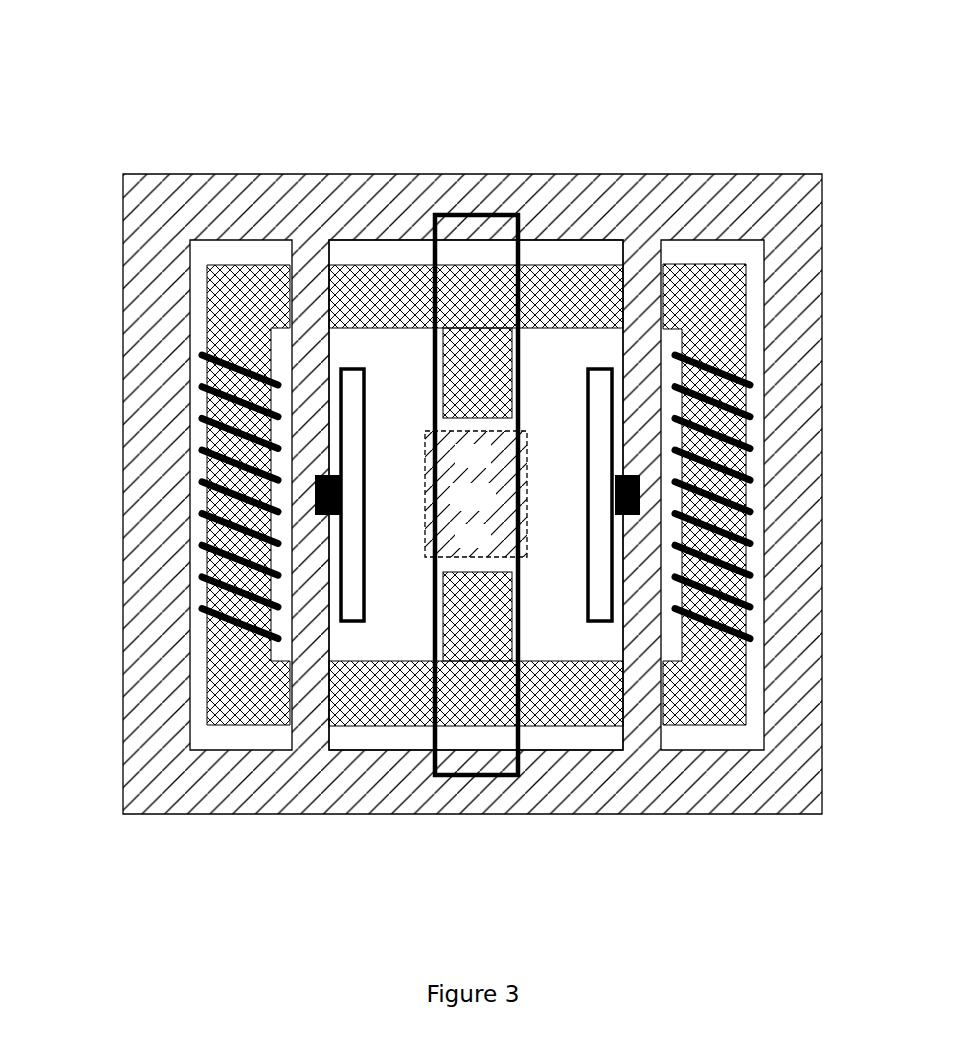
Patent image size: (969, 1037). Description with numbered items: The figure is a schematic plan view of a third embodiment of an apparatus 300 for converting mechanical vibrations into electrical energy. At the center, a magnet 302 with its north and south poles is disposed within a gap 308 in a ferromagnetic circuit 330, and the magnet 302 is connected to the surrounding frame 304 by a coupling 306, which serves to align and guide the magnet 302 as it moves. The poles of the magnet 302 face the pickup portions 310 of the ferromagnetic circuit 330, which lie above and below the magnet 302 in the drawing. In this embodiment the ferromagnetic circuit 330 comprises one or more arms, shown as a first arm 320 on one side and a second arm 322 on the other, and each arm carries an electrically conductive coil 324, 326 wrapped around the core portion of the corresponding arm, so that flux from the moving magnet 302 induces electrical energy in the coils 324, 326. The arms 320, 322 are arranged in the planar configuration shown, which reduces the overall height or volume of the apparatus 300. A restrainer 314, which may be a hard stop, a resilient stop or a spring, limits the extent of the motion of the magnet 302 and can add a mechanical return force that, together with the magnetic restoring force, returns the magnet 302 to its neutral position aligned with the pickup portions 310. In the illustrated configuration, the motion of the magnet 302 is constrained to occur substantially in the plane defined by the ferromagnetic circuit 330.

The apparatus for converting mechanical vibrations into electrical energy 300 is at (457, 414).
The magnet 302 is at (476, 494).
The frame 304 is at (472, 494).
The coupling 306 is at (534, 381).
The gap 308 is at (399, 520).
The center coil 310 is at (476, 495).
The restrainer 314 is at (374, 423).
The arm of the ferromagnetic circuit 320 is at (248, 495).
The arm of the ferromagnetic circuit 322 is at (704, 494).
The electrically conductive coil 324 is at (192, 417).
The electrically conductive coil 326 is at (757, 457).
The ferromagnetic circuit 330 is at (579, 252).